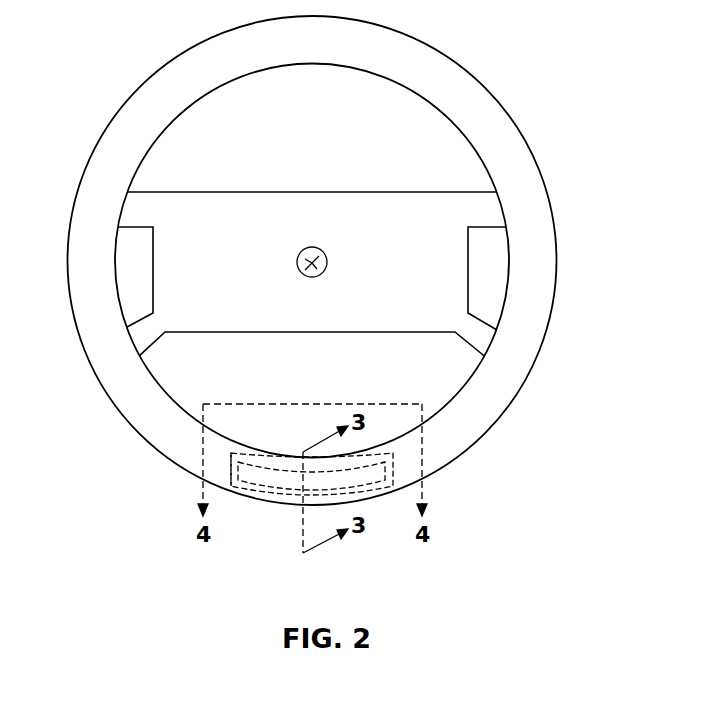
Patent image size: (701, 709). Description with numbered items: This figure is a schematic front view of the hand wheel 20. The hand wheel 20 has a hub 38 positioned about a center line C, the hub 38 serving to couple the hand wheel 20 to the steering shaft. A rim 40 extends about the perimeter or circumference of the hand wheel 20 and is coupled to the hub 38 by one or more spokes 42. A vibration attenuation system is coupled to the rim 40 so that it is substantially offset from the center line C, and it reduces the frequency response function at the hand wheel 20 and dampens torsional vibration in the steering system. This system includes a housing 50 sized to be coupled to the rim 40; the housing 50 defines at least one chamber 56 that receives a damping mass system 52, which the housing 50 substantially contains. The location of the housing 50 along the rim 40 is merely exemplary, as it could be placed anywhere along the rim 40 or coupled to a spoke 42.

The hand wheel 20 is at (126, 56).
The rim 40 is at (468, 66).
The spokes 42 is at (152, 231).
The hub 38 is at (309, 247).
The center line C is at (323, 253).
The housing 50 is at (371, 500).
The damping mass system 52 is at (279, 500).
The chamber 56 is at (235, 480).